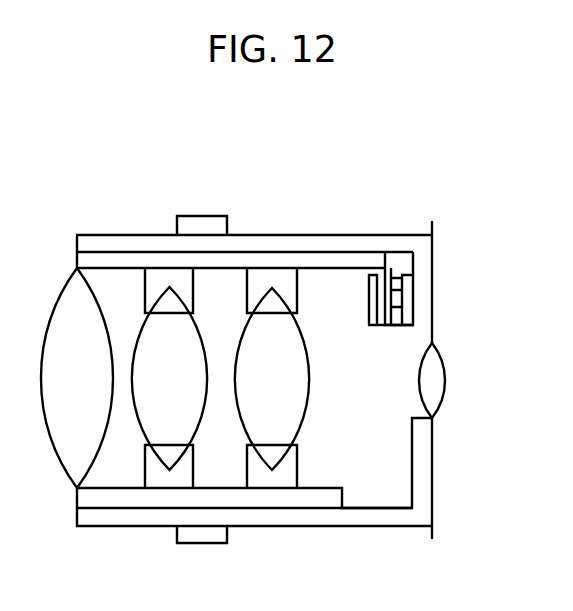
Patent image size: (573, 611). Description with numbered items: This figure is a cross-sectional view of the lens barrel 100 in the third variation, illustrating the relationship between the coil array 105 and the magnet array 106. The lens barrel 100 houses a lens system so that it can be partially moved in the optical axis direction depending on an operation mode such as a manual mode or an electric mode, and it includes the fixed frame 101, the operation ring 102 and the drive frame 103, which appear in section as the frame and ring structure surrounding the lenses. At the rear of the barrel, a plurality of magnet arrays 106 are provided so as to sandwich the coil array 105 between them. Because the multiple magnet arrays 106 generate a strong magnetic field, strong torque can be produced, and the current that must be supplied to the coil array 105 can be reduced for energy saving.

The lens barrel 100 is at (267, 233).
The fixed frame 101 is at (132, 233).
The operation ring 102 is at (195, 215).
The drive frame 103 is at (330, 262).
The coil array 105 is at (393, 327).
The magnet array 106 is at (378, 273).